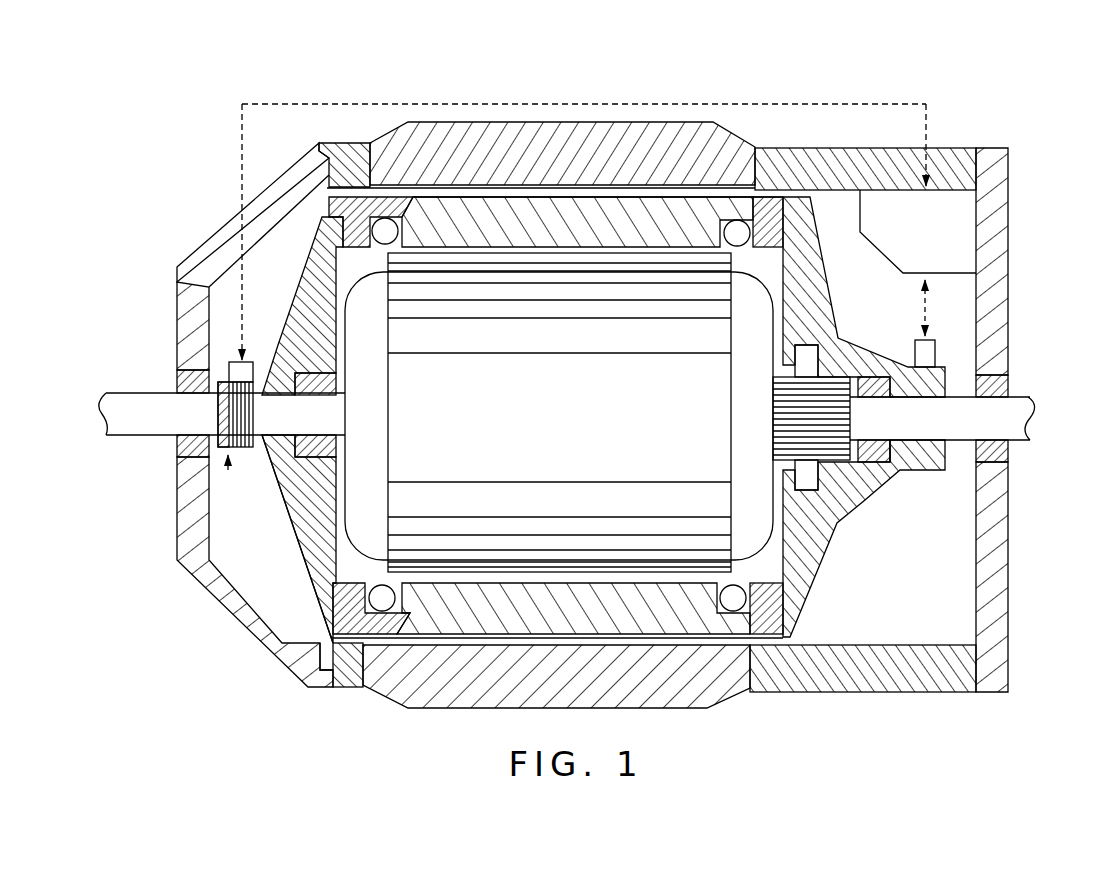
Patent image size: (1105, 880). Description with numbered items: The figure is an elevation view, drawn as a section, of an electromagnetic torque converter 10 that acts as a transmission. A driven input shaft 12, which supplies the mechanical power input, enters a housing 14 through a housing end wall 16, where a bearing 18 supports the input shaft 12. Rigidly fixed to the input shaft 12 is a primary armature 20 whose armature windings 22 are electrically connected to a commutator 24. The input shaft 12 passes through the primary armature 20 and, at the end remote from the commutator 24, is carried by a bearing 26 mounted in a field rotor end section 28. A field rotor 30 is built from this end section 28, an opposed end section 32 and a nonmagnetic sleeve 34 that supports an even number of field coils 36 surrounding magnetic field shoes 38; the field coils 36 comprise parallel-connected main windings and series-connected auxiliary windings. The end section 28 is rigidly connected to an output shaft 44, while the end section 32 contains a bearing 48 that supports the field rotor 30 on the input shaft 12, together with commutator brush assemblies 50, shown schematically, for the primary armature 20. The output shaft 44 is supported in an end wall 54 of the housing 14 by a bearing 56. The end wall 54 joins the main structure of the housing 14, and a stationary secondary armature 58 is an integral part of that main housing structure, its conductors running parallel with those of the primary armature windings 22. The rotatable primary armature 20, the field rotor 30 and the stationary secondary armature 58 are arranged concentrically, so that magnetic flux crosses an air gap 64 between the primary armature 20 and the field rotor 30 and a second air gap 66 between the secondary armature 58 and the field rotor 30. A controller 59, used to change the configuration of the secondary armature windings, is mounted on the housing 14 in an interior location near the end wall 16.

The electromagnetic torque converter 10 is at (1020, 139).
The input shaft 12 is at (1022, 410).
The housing 14 is at (942, 146).
The housing end wall 16 is at (1010, 230).
The bearing 18 is at (1010, 388).
The primary armature 20 is at (548, 429).
The armature windings 22 is at (757, 530).
The commutator 24 is at (838, 465).
The bearing 26 is at (313, 458).
The field rotor end section 28 is at (320, 530).
The field rotor 30 is at (278, 340).
The end section 32 is at (805, 578).
The nonmagnetic sleeve 34 is at (370, 620).
The field coils 36 is at (383, 222).
The magnetic field shoes 38 is at (541, 621).
The output shaft 44 is at (138, 400).
The bearing 48 is at (880, 458).
The commutator brush assemblies 50 is at (816, 353).
The end wall 54 is at (190, 512).
The bearing 56 is at (187, 446).
The secondary armature 58 is at (525, 691).
The controller 59 is at (908, 242).
The air gap 64 is at (542, 245).
The air gap 66 is at (472, 185).